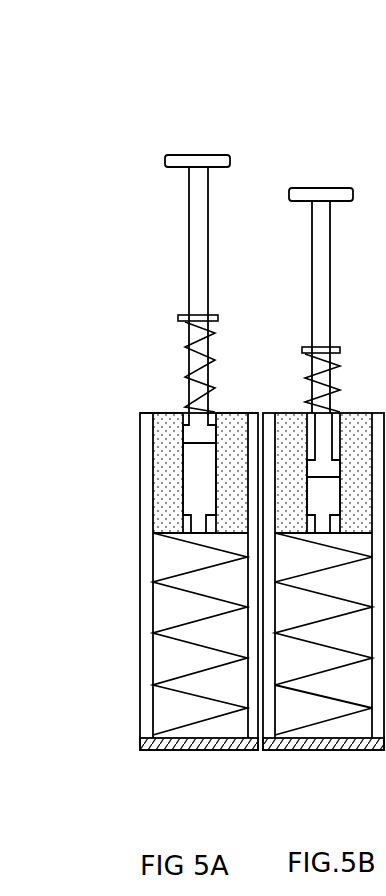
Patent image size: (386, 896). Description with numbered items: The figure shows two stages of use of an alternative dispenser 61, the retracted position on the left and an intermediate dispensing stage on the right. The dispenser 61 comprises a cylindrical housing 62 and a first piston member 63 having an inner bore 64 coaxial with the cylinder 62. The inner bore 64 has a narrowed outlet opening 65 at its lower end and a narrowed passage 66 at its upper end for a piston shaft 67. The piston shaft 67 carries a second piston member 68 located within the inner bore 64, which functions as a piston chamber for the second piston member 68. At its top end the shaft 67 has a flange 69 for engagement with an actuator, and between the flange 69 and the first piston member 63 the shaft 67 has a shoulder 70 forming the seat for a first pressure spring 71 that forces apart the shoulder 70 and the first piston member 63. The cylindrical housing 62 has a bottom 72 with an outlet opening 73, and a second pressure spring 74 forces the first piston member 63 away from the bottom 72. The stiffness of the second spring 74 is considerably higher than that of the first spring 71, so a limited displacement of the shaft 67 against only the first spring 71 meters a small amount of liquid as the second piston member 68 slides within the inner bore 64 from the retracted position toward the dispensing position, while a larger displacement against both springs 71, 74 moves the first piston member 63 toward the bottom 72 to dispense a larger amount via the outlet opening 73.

The dispenser 61 is at (161, 423).
The cylindrical housing 62 is at (135, 581).
The first piston member 63 is at (133, 473).
The inner bore 64 is at (117, 498).
The narrowed outlet opening 65 is at (130, 634).
The narrowed passage 66 is at (139, 433).
The piston shaft 67 is at (137, 290).
The second piston member 68 is at (143, 413).
The flange 69 is at (231, 142).
The shoulder 70 is at (148, 278).
The first pressure spring 71 is at (138, 353).
The bottom 72 is at (171, 783).
The outlet opening 73 is at (224, 790).
The second pressure spring 74 is at (130, 634).